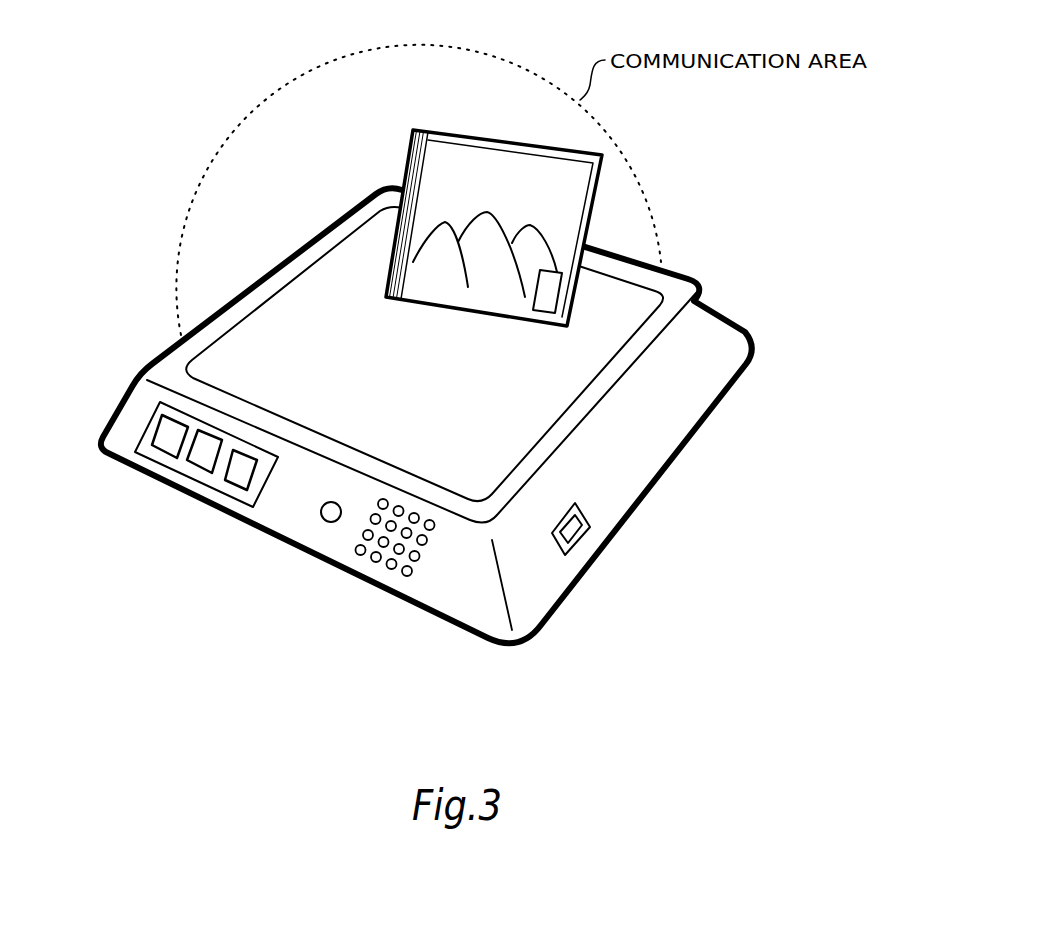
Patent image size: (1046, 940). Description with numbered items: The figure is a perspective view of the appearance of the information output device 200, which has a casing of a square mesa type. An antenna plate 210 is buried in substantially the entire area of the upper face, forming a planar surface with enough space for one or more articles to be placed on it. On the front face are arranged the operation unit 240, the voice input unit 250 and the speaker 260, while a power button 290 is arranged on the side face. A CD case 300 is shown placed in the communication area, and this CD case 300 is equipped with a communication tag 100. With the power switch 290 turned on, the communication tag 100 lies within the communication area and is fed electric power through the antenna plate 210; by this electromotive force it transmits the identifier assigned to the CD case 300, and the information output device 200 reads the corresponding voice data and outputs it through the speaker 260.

The communication tag 100 is at (548, 302).
The information output device 200 is at (712, 375).
The antenna plate 210 is at (233, 372).
The operation unit 240 is at (200, 477).
The voice input unit 250 is at (324, 522).
The speaker 260 is at (393, 568).
The power button 290 is at (578, 540).
The CD case 300 is at (468, 162).